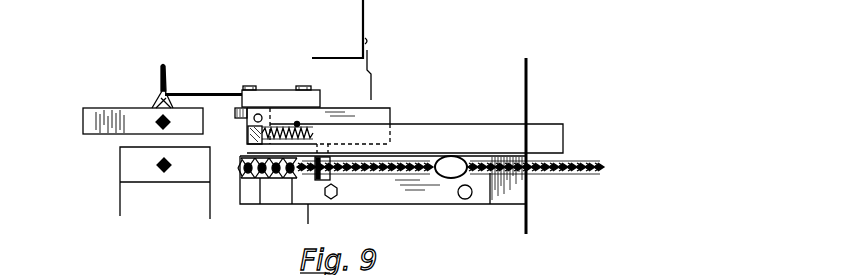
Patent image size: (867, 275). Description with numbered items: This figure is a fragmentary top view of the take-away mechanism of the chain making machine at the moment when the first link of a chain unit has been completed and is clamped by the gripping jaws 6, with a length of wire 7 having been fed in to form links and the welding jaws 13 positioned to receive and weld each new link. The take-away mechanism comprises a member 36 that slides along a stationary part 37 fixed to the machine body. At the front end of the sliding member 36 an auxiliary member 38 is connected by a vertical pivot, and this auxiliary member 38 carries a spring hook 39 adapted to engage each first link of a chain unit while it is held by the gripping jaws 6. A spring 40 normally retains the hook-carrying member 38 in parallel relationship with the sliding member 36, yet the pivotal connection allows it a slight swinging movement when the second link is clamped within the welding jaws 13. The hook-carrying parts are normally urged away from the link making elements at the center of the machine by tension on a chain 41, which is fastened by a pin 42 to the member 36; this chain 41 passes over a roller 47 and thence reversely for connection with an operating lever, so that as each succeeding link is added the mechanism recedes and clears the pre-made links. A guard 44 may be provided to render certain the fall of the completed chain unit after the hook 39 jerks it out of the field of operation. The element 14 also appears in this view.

The gripping jaws 6 is at (140, 117).
The wire 7 is at (85, 5).
The welding jaws 13 is at (127, 168).
The frame member 14 is at (196, 5).
The sliding member 36 is at (347, 110).
The stationary part 37 is at (450, 132).
The auxiliary member 38 is at (270, 100).
The spring hook 39 is at (198, 94).
The spring 40 is at (247, 136).
The chain 41 is at (417, 168).
The pin 42 is at (316, 174).
The guard 44 is at (372, 84).
The roller 47 is at (248, 177).